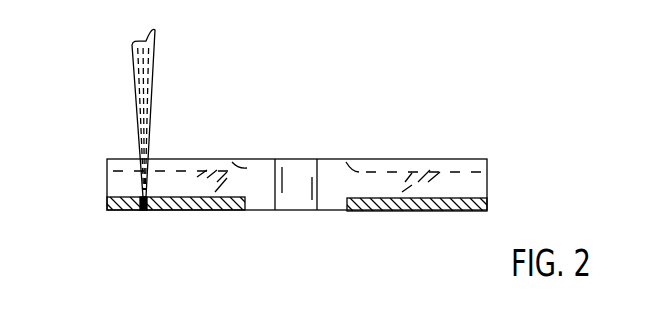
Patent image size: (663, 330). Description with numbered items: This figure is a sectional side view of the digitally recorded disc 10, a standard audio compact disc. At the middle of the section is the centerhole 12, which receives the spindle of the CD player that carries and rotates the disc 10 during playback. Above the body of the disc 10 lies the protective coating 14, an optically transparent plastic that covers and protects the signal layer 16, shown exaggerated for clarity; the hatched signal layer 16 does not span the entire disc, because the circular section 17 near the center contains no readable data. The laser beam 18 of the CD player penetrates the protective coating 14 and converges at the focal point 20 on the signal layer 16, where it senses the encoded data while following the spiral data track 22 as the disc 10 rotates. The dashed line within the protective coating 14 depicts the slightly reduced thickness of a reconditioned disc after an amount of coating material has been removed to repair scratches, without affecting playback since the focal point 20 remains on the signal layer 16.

The digitally recorded disc 10 is at (427, 297).
The centerhole 12 is at (302, 167).
The protective coating 14 is at (397, 162).
The signal layer 16 is at (478, 198).
The circular section 17 is at (340, 211).
The laser beam 18 is at (147, 72).
The focal point 20 is at (143, 197).
The spiral data track 22 is at (143, 210).